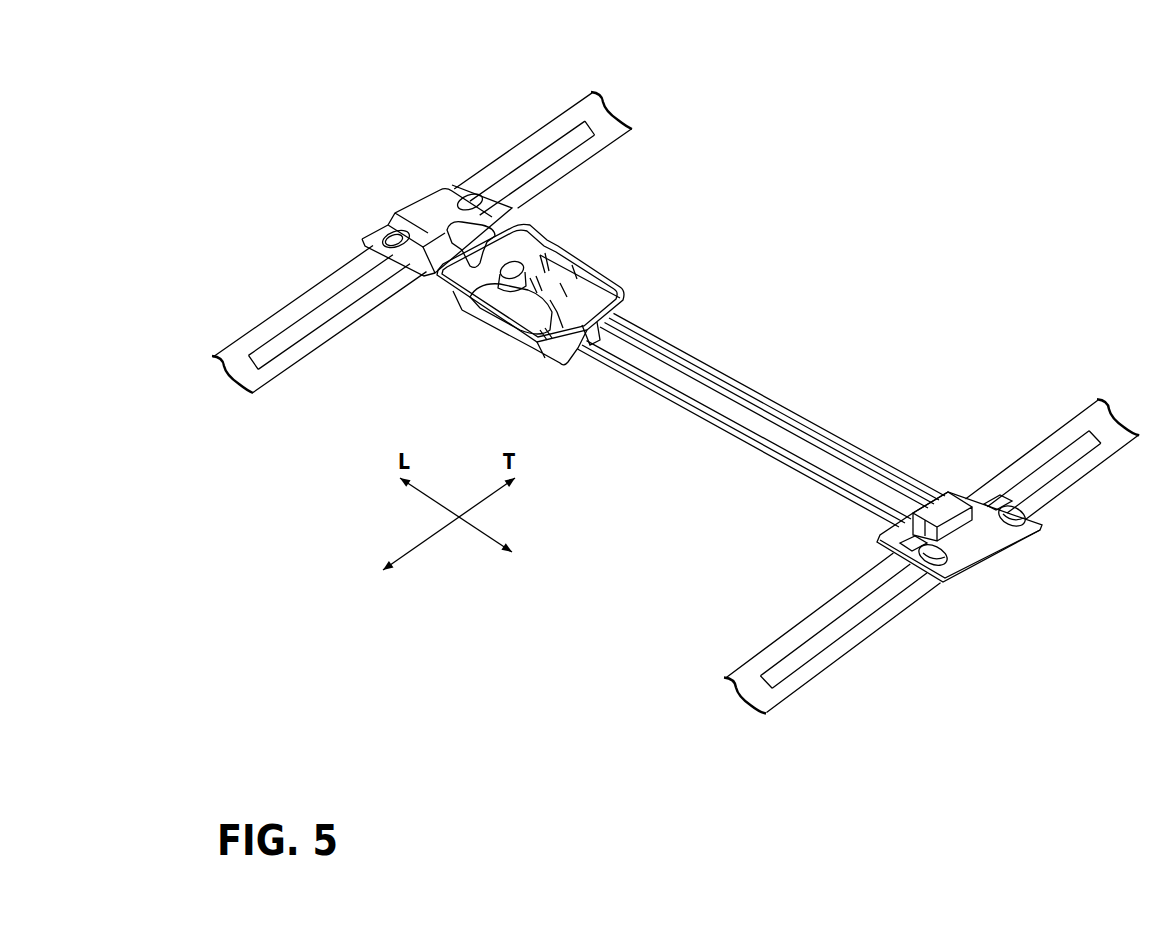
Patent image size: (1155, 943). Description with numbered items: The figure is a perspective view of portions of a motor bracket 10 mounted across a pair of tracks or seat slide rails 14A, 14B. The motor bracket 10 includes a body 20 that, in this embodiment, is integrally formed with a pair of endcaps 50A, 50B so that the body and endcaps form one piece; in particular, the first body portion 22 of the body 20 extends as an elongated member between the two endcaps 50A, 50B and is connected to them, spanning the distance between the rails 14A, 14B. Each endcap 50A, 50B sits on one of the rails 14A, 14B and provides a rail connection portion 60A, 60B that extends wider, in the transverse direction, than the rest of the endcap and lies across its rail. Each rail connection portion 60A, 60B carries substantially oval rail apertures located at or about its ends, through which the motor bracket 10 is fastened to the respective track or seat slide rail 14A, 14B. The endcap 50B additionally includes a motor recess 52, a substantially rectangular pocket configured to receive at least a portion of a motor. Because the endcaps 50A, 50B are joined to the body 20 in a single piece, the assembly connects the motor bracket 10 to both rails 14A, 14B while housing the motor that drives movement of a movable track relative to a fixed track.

The motor bracket 10 is at (975, 128).
The body 20 is at (806, 293).
The track/rail 14A is at (840, 655).
The track/rail 14B is at (318, 342).
The first body portion 22 is at (678, 378).
The endcap 50A is at (1004, 554).
The endcap 50B is at (561, 263).
The motor recess 52 is at (594, 265).
The rail connection portion 60A is at (1004, 518).
The rail connection portion 60B is at (400, 248).